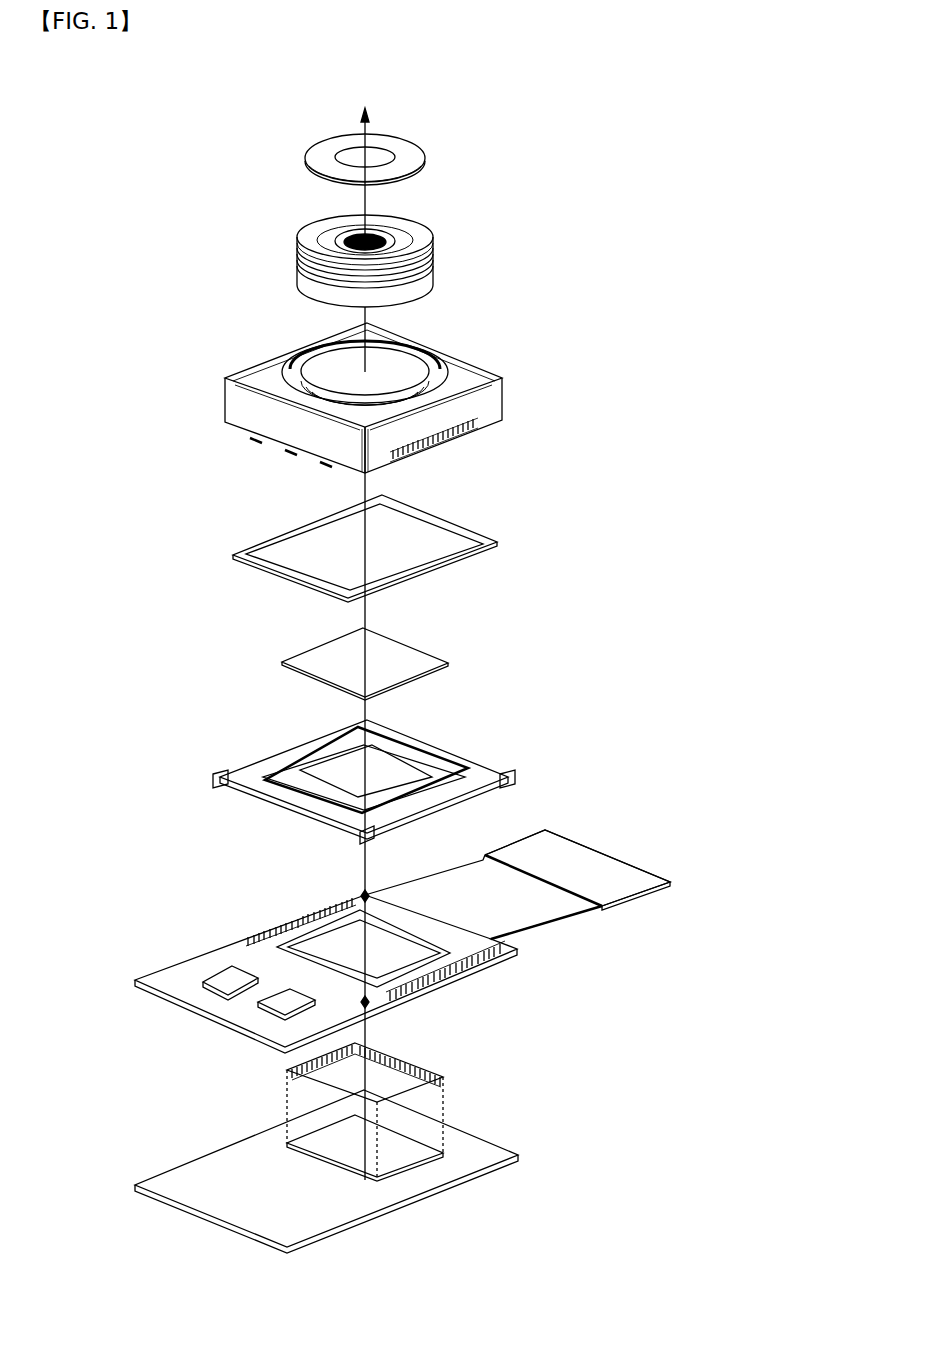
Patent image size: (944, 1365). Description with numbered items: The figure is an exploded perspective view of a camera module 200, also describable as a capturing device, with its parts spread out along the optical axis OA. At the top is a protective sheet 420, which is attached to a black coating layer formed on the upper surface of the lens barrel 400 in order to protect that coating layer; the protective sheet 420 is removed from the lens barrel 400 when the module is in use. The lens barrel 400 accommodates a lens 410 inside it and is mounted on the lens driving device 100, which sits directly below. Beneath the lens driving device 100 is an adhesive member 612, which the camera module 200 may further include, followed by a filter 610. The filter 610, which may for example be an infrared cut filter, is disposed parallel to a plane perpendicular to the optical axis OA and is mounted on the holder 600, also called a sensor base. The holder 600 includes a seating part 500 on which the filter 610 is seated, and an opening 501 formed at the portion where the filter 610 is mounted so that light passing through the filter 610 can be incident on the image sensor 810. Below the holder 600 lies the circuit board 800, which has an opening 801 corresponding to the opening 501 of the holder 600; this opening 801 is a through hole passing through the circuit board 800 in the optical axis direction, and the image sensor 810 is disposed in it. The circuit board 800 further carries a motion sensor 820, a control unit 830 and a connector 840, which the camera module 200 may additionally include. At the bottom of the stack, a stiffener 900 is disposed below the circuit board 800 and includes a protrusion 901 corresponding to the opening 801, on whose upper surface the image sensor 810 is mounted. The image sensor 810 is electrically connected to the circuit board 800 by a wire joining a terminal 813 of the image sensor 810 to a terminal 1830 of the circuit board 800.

The optical axis OA is at (372, 203).
The camera module 200 is at (575, 252).
The protective sheet 420 is at (421, 150).
The lens barrel 400 is at (380, 258).
The lens 410 is at (348, 236).
The lens driving device 100 is at (503, 388).
The adhesive member 612 is at (500, 542).
The filter 610 is at (425, 660).
The holder 600 is at (364, 760).
The seating part 500 is at (373, 745).
The opening 501 is at (412, 745).
The circuit board 800 is at (402, 937).
The opening 801 is at (343, 933).
The terminal 1830 is at (450, 987).
The motion sensor 820 is at (222, 966).
The control unit 830 is at (235, 1022).
The connector 840 is at (587, 848).
The image sensor 810 is at (439, 1110).
The terminal 813 is at (445, 1082).
The stiffener 900 is at (342, 1171).
The protrusion 901 is at (450, 1148).